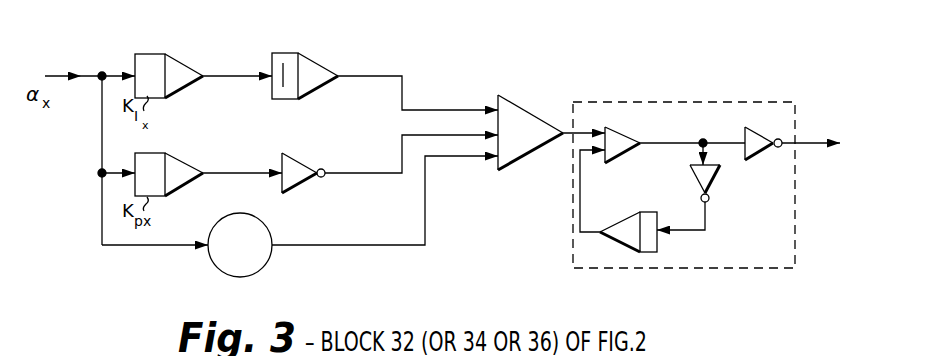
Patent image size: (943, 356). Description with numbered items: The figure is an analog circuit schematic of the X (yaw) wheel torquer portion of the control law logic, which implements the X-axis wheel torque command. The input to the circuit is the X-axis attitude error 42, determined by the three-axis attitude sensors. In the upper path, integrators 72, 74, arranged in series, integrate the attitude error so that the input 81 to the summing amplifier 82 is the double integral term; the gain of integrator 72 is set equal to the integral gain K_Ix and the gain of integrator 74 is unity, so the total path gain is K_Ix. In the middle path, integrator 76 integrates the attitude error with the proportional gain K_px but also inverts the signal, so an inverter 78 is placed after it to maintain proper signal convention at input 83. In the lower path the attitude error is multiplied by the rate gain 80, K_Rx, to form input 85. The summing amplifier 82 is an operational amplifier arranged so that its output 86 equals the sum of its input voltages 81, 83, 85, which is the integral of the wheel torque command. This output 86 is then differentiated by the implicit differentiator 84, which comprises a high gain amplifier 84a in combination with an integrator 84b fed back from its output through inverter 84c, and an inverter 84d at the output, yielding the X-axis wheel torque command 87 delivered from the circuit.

The X-axis attitude error 42 is at (60, 74).
The integrator 72 is at (155, 59).
The integrator 74 is at (297, 54).
The integrator 76 is at (172, 160).
The inverter 78 is at (291, 163).
The rate gain 80 is at (268, 233).
The input to summing amplifier 81 is at (458, 108).
The summing amplifier 82 is at (538, 105).
The input to summing amplifier 83 is at (402, 133).
The implicit differentiator 84 is at (631, 102).
The high gain amplifier 84a is at (625, 132).
The integrator 84b is at (645, 213).
The inverter 84c is at (692, 174).
The inverter 84d is at (755, 157).
The input to summing amplifier 85 is at (456, 159).
The output of summing amplifier 86 is at (567, 145).
The output signal 87 is at (812, 141).